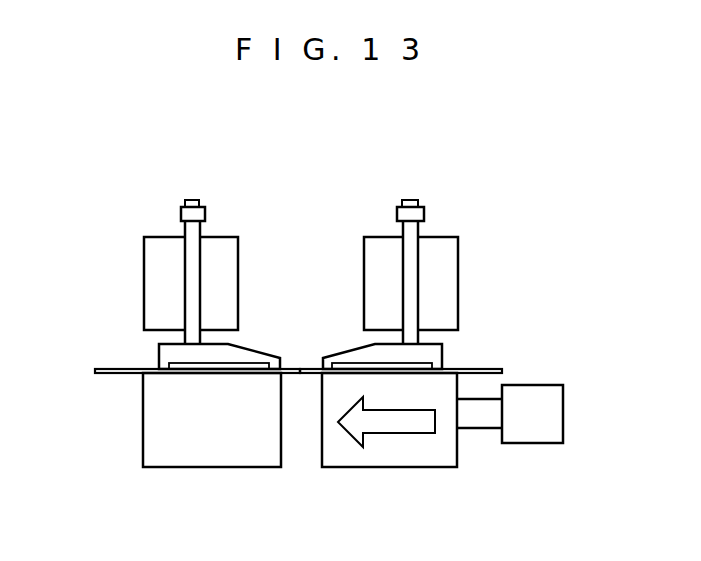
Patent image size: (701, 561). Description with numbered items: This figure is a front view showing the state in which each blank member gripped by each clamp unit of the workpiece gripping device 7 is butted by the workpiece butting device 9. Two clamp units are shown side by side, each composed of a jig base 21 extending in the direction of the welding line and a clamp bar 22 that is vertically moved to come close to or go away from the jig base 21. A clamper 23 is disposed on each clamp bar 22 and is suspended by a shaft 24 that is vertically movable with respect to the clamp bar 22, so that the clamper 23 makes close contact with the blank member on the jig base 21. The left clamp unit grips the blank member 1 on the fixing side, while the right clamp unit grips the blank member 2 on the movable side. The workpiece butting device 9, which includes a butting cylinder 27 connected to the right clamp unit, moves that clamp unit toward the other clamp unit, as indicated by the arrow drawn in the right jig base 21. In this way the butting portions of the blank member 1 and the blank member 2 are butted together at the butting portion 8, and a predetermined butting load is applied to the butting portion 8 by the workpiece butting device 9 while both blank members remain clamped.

The blank member 1 is at (108, 368).
The blank member 2 is at (493, 368).
The workpiece gripping device 7 is at (439, 218).
The butting portion 8 is at (298, 369).
The workpiece butting device 9 is at (575, 384).
The jig base 21 is at (208, 458).
The clamp bar 22 is at (157, 245).
The clamper 23 is at (158, 358).
The shaft 24 is at (199, 230).
The butting cylinder 27 is at (553, 418).